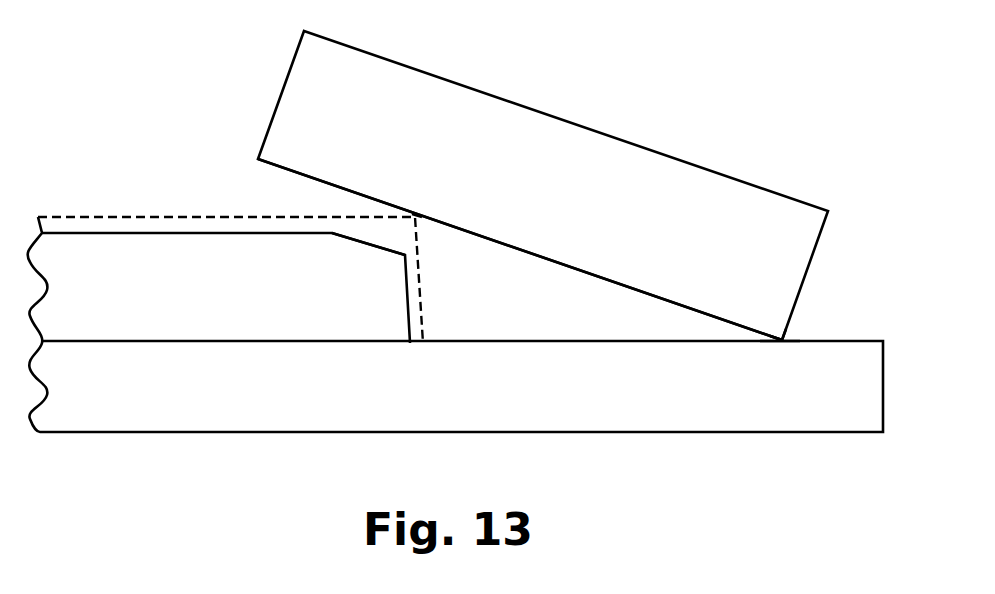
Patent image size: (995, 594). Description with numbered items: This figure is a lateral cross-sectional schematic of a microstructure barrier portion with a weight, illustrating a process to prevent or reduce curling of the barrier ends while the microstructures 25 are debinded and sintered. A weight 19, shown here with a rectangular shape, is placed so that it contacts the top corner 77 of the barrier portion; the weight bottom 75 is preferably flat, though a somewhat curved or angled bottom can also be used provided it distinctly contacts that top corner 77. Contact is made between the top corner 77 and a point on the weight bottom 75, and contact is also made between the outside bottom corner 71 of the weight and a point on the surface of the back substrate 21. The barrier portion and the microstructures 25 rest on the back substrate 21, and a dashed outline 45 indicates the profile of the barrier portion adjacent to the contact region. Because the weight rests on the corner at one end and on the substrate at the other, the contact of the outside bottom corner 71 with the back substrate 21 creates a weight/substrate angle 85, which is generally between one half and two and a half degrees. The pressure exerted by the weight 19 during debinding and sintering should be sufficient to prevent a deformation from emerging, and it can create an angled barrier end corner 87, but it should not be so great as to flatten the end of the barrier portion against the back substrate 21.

The weight 19 is at (537, 127).
The back substrate 21 is at (722, 410).
The microstructures 25 is at (198, 233).
The dashed outline position 45 is at (98, 215).
The outside bottom corner 71 is at (792, 335).
The weight bottom 75 is at (540, 257).
The top corner 77 is at (420, 218).
The weight/substrate angle 85 is at (763, 339).
The angled barrier end corner 87 is at (370, 247).